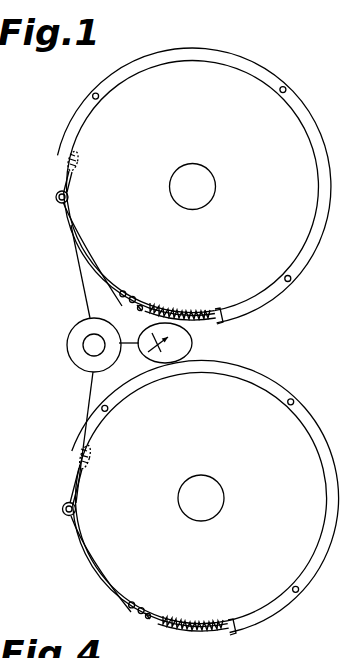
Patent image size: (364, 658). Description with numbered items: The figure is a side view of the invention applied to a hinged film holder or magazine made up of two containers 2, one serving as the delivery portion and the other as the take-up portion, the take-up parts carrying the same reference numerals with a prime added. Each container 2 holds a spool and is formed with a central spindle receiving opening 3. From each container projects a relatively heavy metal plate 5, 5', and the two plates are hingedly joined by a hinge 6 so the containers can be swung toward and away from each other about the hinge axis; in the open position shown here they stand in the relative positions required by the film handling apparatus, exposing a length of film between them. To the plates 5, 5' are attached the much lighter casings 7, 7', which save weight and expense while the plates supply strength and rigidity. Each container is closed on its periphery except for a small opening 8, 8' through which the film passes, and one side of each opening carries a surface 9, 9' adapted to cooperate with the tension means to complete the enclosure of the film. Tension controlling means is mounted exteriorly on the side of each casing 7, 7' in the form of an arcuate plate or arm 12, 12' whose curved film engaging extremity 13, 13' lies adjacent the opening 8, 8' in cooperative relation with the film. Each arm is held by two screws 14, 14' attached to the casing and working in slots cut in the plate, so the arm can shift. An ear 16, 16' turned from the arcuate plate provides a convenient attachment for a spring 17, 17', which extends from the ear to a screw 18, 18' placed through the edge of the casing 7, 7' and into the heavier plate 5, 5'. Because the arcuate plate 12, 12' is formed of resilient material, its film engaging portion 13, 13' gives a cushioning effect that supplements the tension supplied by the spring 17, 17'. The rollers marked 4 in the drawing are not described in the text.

The container 2 is at (308, 183).
The spindle receiving opening 3 is at (215, 171).
The driving roller 4 is at (40, 223).
The plate 5 is at (220, 184).
The hinge 6 is at (83, 345).
The casing 7 is at (194, 182).
The opening 8 is at (46, 176).
The surface 9 is at (52, 151).
The arcuate plate 12 is at (139, 254).
The curved film engaging extremity 13 is at (40, 196).
The screw 14 is at (137, 281).
The ear 16 is at (234, 323).
The spring 17 is at (187, 296).
The screw 18 is at (162, 289).
The casing 7' is at (205, 488).
The plate 5' is at (227, 496).
The surface 9' is at (66, 456).
The opening 8' is at (59, 486).
The curved film engaging extremity 13' is at (50, 518).
The arcuate plate 12' is at (136, 565).
The screw 14' is at (161, 595).
The screw 18' is at (155, 635).
The spring 17' is at (193, 637).
The ear 16' is at (248, 636).